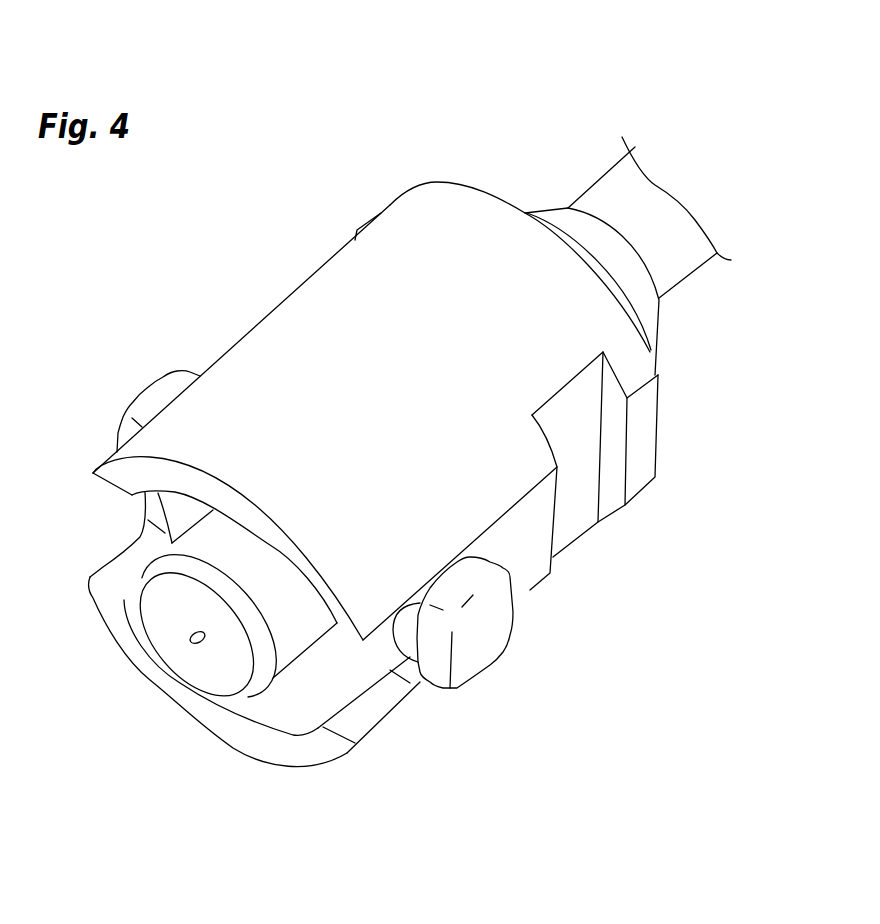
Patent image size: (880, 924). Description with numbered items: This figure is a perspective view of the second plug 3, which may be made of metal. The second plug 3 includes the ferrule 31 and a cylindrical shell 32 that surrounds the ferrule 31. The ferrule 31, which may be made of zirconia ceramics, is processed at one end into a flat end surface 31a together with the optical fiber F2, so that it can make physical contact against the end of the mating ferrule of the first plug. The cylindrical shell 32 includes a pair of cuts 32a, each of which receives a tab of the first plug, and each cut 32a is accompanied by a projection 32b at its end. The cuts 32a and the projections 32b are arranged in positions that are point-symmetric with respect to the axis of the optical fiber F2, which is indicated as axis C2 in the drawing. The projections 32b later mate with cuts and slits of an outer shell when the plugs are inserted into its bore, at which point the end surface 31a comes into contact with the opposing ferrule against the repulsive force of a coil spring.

The second plug 3 is at (545, 110).
The ferrule 31 is at (193, 522).
The end surface 31a is at (227, 667).
The cylindrical shell 32 is at (264, 319).
The cuts 32a is at (117, 560).
The projections 32b is at (152, 392).
The optical fiber F2 is at (195, 645).
The axis C2 is at (687, 257).